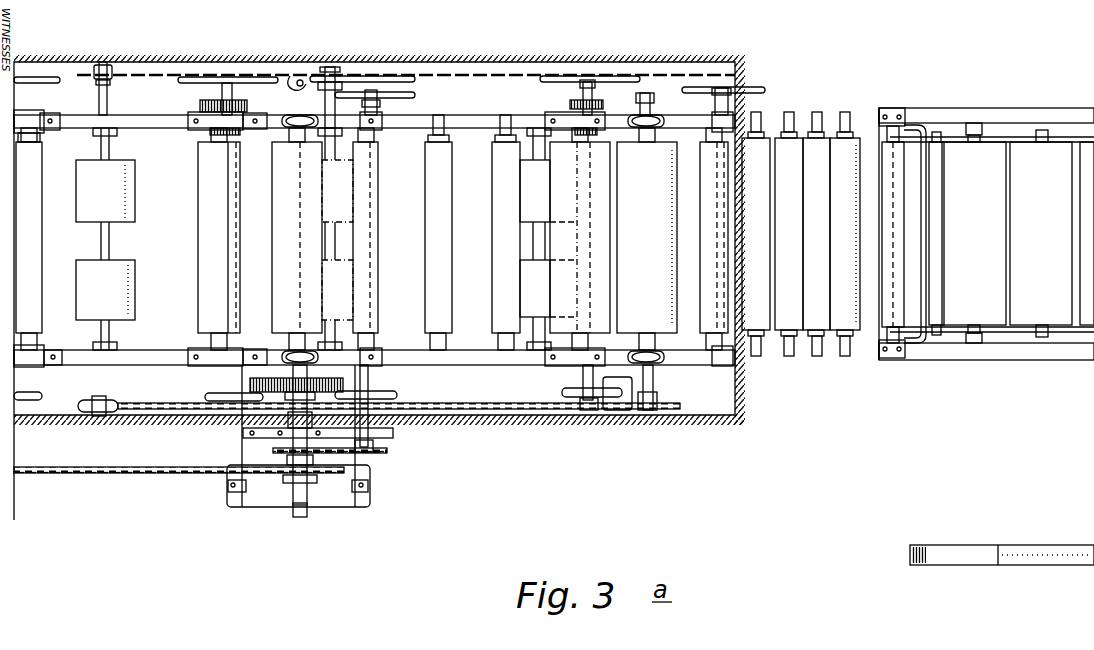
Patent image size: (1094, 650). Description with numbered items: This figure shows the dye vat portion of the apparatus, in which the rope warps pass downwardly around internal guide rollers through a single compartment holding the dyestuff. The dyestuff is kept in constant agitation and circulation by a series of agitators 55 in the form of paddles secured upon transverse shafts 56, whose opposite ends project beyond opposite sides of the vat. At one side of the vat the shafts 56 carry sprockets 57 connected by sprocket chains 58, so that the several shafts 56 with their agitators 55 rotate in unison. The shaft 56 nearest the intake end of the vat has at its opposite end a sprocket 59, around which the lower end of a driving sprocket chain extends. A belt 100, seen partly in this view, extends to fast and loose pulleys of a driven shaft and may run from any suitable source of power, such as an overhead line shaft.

The agitators 55 is at (125, 262).
The transverse shafts 56 is at (100, 243).
The sprockets 57 is at (109, 80).
The sprocket chains 58 is at (183, 73).
The sprocket 59 is at (96, 402).
The belt 100 is at (1063, 563).